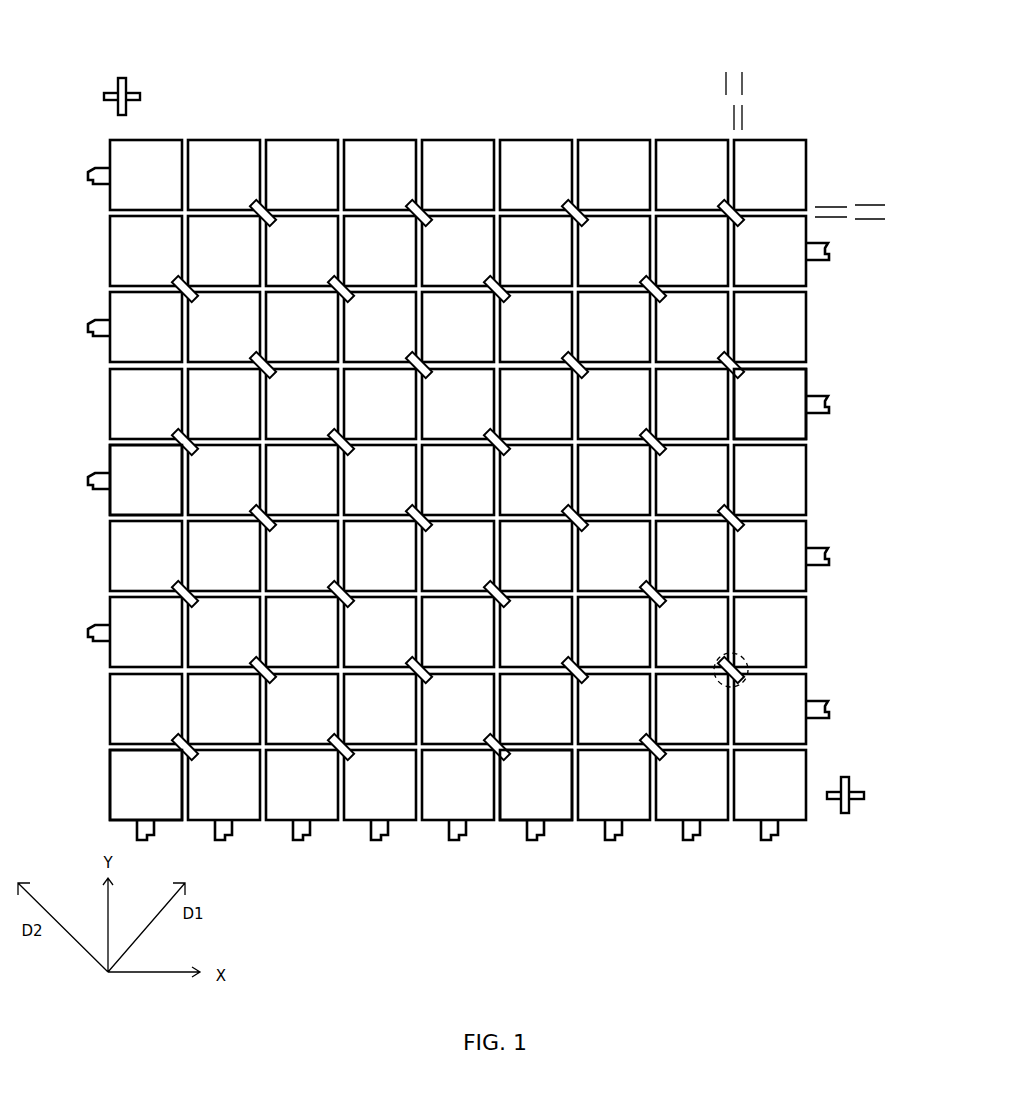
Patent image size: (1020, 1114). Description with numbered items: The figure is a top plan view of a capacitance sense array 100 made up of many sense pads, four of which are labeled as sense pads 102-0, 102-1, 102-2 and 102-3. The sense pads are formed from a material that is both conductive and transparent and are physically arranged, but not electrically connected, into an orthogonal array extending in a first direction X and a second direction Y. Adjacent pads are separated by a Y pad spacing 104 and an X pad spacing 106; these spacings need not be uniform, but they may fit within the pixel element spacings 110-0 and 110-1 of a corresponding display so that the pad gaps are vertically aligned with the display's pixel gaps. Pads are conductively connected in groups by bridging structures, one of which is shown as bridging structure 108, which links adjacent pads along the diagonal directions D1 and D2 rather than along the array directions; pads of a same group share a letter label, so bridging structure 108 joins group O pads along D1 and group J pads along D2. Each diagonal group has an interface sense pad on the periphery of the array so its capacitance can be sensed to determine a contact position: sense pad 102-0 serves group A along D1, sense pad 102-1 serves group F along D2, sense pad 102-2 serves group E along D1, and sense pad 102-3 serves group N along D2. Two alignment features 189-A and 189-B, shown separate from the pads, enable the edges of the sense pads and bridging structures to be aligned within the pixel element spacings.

The capacitance sense array 100 is at (246, 49).
The sense pad 102-0 is at (146, 785).
The sense pad 102-1 is at (536, 785).
The sense pad 102-2 is at (146, 480).
The sense pad 102-3 is at (770, 404).
The Y pad spacing 104 is at (837, 223).
The X pad spacing 106 is at (717, 118).
The bridging structure 108 is at (750, 663).
The pixel element spacing 110-0 is at (712, 84).
The pixel element spacing 110-1 is at (870, 192).
The alignment feature 189-A is at (829, 801).
The alignment feature 189-B is at (104, 96).